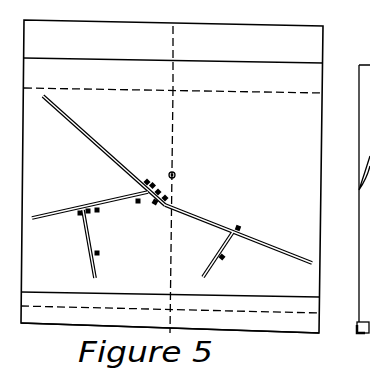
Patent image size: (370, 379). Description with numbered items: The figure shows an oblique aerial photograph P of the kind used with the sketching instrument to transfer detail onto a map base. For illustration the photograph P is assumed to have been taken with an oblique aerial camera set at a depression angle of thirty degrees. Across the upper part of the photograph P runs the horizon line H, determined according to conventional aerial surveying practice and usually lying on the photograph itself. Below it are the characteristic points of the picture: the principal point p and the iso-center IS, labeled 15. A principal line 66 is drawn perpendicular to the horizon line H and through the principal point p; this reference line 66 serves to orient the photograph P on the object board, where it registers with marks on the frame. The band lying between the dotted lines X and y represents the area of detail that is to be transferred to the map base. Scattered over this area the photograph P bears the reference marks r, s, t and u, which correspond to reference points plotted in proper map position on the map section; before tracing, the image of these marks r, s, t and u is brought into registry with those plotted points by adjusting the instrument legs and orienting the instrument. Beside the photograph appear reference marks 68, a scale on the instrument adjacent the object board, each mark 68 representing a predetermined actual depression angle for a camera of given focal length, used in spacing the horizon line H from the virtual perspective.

The principal line 66 is at (181, 123).
The reference marks 68 is at (349, 199).
The iso-center 15 is at (174, 289).
The horizon line H is at (171, 56).
The dotted line X is at (269, 96).
The oblique aerial photograph P is at (323, 165).
The principal point p is at (174, 171).
The reference mark t is at (122, 188).
The reference mark u is at (252, 206).
The reference mark r is at (282, 305).
The reference mark s is at (44, 303).
The dotted line y is at (302, 313).